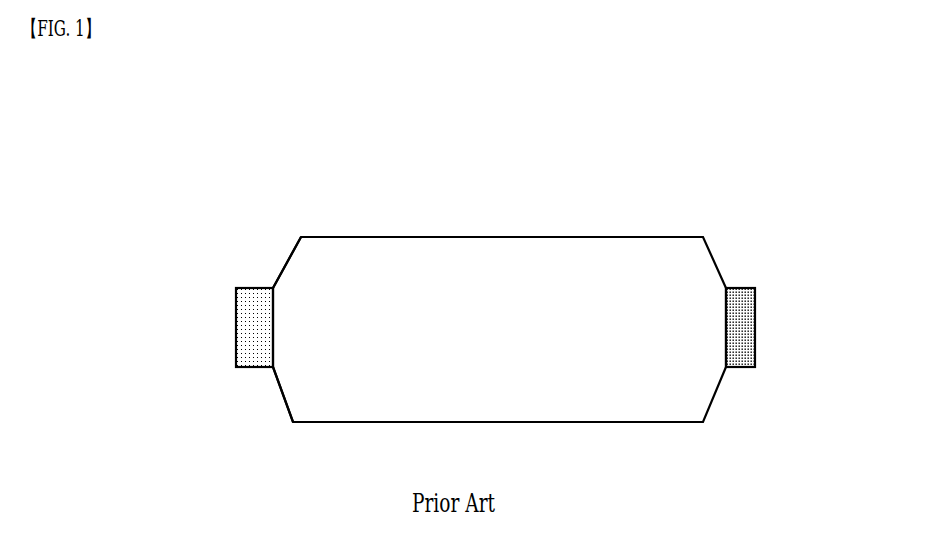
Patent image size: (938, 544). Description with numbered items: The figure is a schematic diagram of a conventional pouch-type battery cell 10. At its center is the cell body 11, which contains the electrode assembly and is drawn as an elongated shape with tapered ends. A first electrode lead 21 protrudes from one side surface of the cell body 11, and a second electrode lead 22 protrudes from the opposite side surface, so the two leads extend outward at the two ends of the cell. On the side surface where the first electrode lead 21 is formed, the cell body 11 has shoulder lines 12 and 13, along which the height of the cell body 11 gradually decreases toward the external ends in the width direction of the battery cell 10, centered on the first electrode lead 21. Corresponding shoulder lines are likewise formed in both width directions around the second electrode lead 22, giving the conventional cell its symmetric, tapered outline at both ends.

The battery cell 10 is at (135, 124).
The cell body 11 is at (523, 237).
The shoulder line 12 is at (289, 258).
The shoulder line 13 is at (283, 397).
The first electrode lead 21 is at (236, 323).
The second electrode lead 22 is at (757, 325).